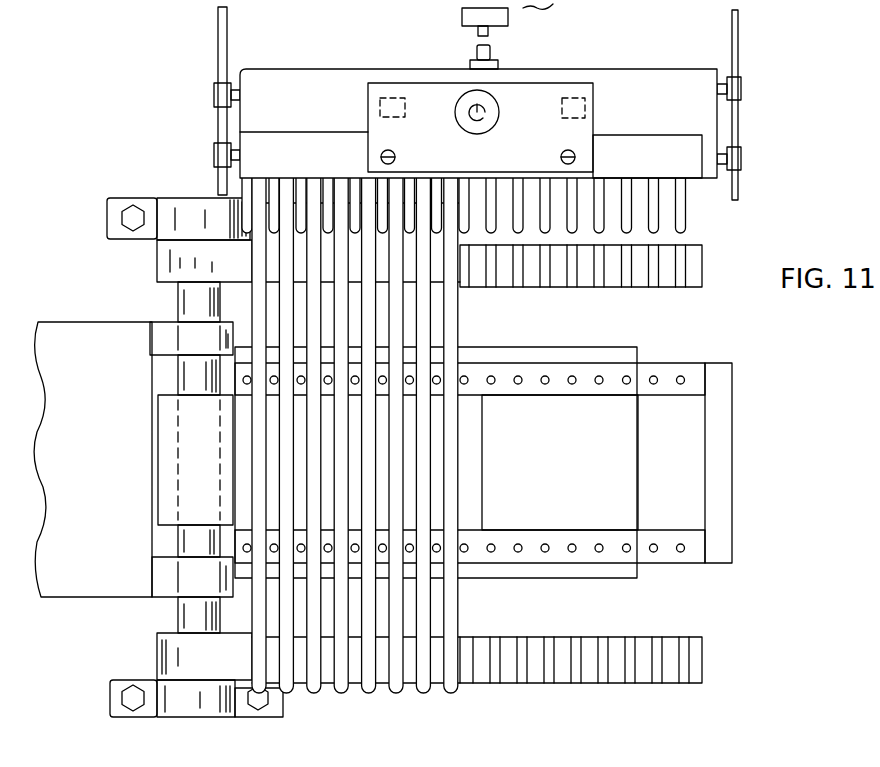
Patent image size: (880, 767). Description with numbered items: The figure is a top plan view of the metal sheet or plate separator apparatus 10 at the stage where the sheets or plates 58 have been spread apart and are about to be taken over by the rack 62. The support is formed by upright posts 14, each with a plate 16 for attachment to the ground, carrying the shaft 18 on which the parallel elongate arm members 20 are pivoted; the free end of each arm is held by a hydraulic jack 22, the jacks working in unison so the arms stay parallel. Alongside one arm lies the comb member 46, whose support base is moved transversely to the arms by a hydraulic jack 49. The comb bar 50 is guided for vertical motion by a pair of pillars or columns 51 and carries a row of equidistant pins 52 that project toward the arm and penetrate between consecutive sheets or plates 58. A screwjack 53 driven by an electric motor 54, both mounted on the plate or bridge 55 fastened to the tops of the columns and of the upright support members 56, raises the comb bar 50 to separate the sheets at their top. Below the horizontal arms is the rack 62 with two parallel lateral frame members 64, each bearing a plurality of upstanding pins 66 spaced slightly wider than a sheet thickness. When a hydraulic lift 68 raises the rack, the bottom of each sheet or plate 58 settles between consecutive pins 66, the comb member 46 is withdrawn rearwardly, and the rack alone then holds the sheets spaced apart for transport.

The metal sheet or plate separator apparatus 10 is at (140, 627).
The upright posts 14 is at (442, 100).
The plate 16 is at (112, 219).
The shaft 18 is at (178, 302).
The elongate arm members 20 is at (477, 443).
The hydraulic jack 22 is at (620, 278).
The comb member 46 is at (478, 105).
The hydraulic jack 49 is at (510, 17).
The comb bar 50 is at (658, 152).
The pillars or columns 51 is at (561, 157).
The pins 52 is at (672, 222).
The screwjack 53 is at (468, 128).
The electric motor 54 is at (500, 118).
The plate or bridge 55 is at (425, 105).
The upright support members 56 is at (380, 107).
The sheets or plates 58 is at (256, 481).
The rack 62 is at (734, 420).
The lateral frame members 64 is at (679, 363).
The upstanding pins 66 is at (492, 385).
The hydraulic lift 68 is at (640, 490).